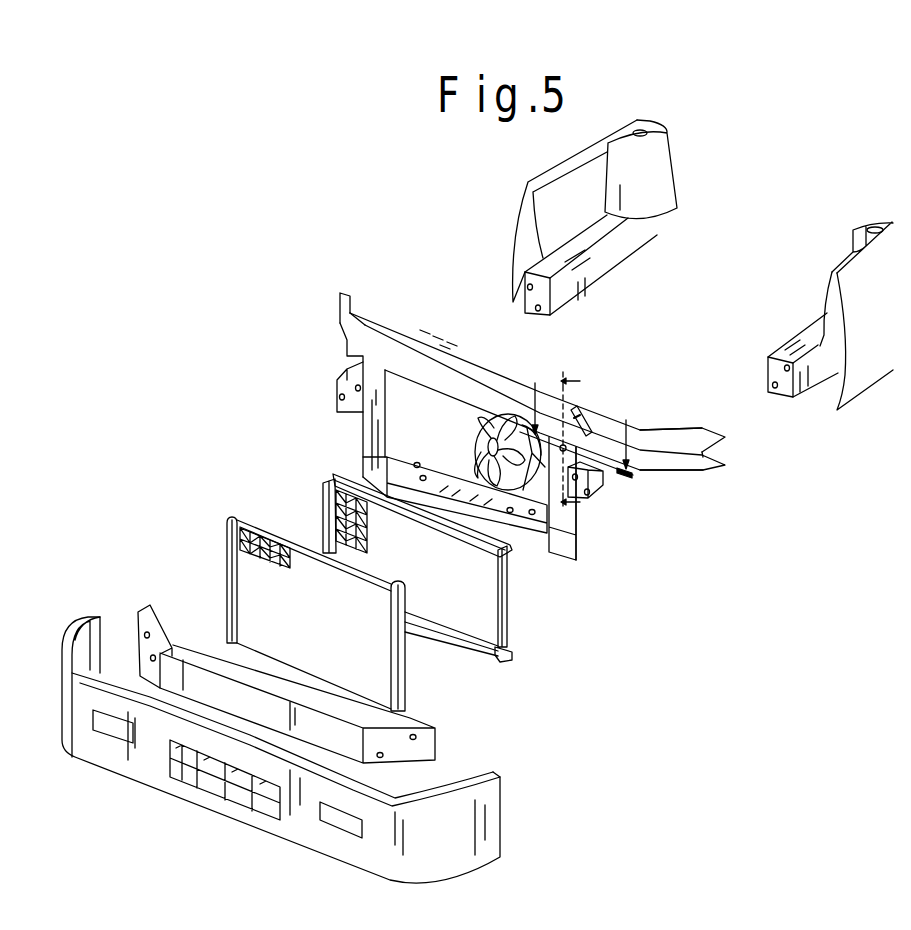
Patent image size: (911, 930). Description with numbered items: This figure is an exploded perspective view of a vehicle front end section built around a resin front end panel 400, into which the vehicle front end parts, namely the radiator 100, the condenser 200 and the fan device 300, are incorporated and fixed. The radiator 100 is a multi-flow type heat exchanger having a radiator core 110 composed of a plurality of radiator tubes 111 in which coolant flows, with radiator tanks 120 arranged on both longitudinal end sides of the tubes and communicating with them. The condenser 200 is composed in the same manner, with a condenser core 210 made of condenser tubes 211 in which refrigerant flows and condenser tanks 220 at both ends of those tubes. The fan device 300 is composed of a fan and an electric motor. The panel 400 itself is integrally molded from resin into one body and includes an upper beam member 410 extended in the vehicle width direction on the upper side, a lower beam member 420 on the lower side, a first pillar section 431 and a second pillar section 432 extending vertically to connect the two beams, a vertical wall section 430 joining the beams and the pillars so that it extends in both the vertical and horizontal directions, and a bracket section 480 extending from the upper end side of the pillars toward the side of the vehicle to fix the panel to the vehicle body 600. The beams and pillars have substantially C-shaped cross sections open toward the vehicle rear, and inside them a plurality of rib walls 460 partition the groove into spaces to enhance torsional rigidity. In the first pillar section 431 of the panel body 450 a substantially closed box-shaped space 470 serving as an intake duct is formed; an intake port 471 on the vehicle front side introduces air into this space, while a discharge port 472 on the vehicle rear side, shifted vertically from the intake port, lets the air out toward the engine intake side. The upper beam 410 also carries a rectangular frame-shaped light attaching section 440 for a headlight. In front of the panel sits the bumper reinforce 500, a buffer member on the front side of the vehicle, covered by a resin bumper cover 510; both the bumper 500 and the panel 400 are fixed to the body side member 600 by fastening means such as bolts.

The radiator 100 is at (364, 566).
The radiator core 110 is at (390, 550).
The radiator tubes 111 is at (317, 511).
The radiator tanks 120 is at (505, 560).
The condenser 200 is at (264, 602).
The condenser core 210 is at (279, 601).
The condenser tubes 211 is at (300, 560).
The condenser tanks 220 is at (228, 573).
The fan device 300 is at (505, 420).
The front end panel 400 is at (485, 437).
The upper beam member 410 is at (502, 374).
The lower beam member 420 is at (537, 537).
The vertical wall section 430 is at (593, 506).
The first pillar section 431 is at (566, 536).
The second pillar section 432 is at (370, 433).
The light attaching section 440 is at (315, 307).
The panel body 450 is at (335, 367).
The rib walls 460 is at (598, 484).
The space (intake duct) 470 is at (584, 428).
The intake port (first opening section) 471 is at (623, 478).
The discharge port (second opening section) 472 is at (577, 427).
The bracket section 480 is at (660, 447).
The bumper reinforce 500 is at (170, 667).
The bumper cover 510 is at (483, 817).
The vehicle body (side member) 600 is at (523, 295).